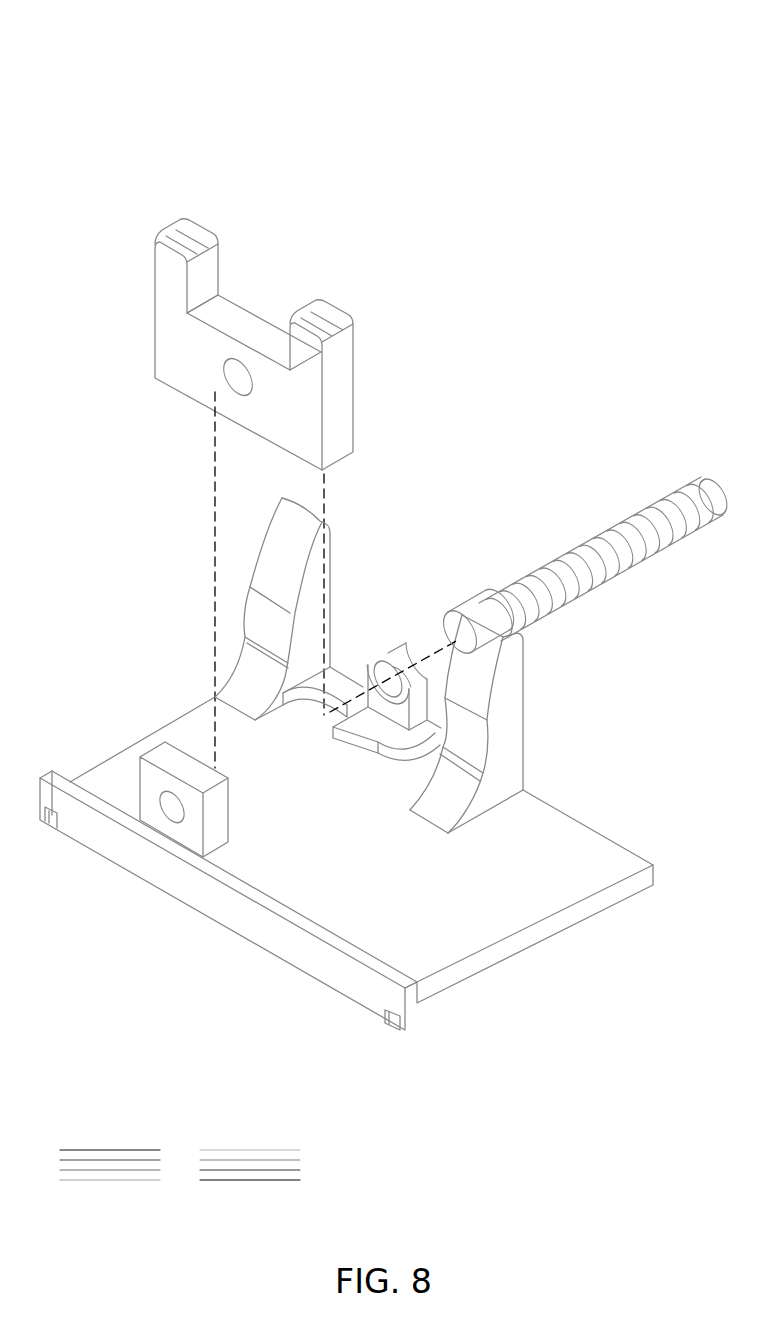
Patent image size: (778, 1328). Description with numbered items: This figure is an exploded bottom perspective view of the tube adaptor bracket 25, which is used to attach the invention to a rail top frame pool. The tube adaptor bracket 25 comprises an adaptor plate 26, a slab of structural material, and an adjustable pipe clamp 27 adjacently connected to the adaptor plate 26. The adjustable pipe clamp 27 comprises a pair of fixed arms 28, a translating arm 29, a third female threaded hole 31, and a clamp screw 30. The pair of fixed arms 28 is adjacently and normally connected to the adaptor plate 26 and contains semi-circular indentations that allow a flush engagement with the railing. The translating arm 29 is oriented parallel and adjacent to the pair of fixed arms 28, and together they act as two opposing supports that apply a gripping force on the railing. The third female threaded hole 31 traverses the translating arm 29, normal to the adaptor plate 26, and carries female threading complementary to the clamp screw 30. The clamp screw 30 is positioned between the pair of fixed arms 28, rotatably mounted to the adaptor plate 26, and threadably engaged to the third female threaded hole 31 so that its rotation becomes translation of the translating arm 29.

The tube adaptor bracket 25 is at (598, 96).
The adaptor plate 26 is at (140, 853).
The adjustable pipe clamp 27 is at (214, 200).
The pair of fixed arms 28 is at (268, 540).
The translating arm 29 is at (250, 323).
The clamp screw 30 is at (672, 536).
The third female threaded hole 31 is at (232, 374).